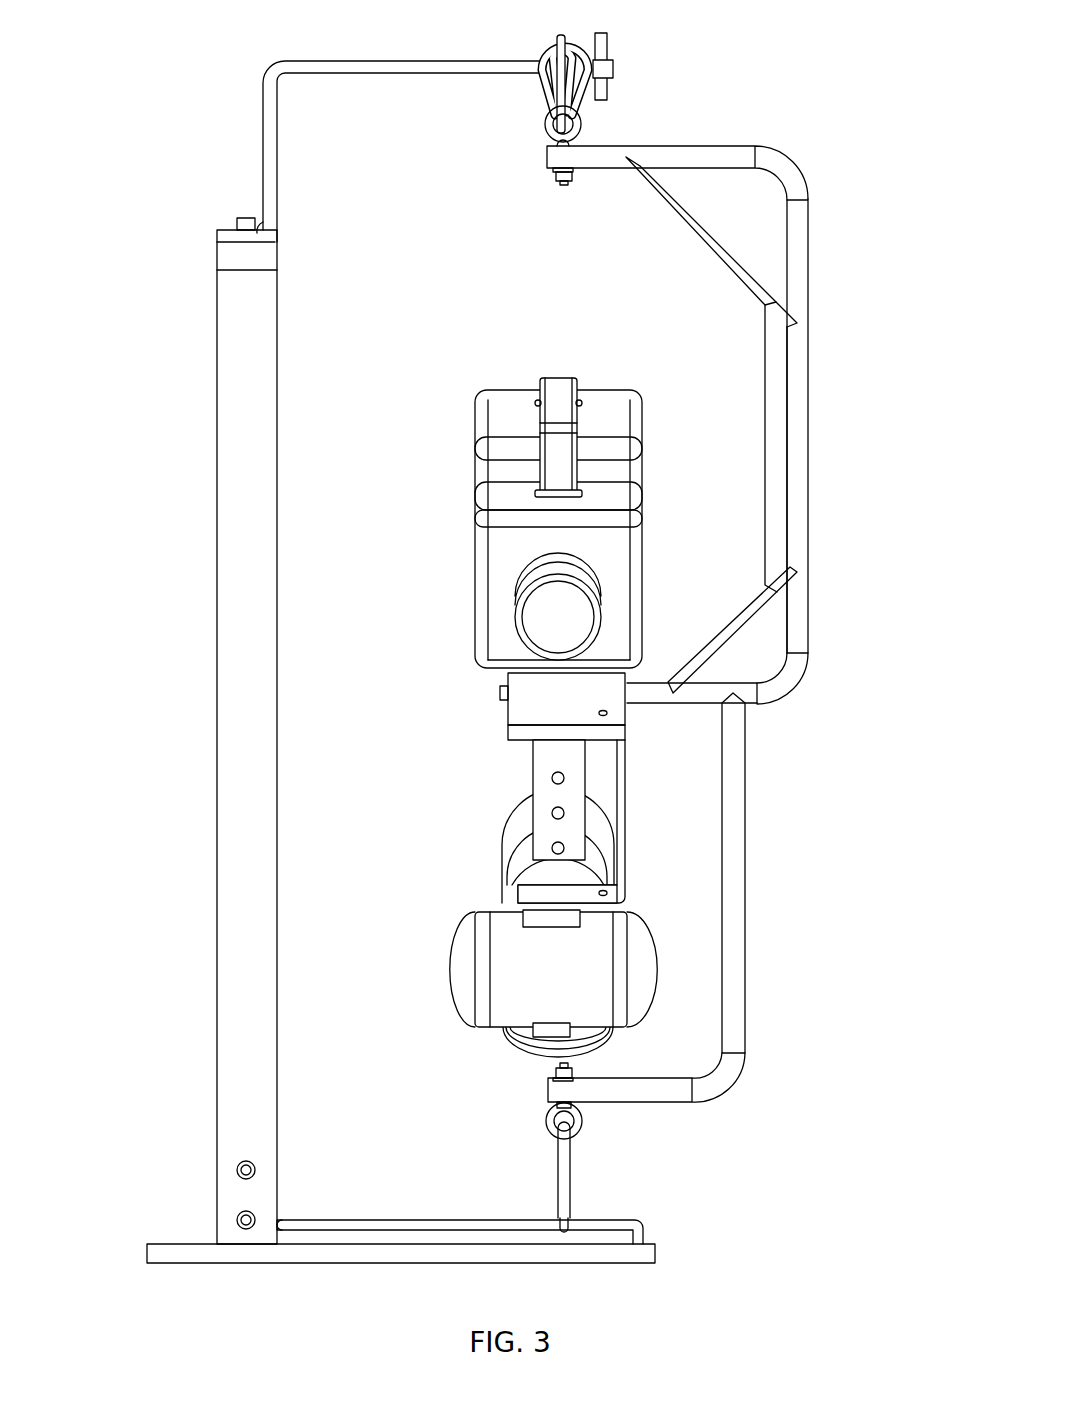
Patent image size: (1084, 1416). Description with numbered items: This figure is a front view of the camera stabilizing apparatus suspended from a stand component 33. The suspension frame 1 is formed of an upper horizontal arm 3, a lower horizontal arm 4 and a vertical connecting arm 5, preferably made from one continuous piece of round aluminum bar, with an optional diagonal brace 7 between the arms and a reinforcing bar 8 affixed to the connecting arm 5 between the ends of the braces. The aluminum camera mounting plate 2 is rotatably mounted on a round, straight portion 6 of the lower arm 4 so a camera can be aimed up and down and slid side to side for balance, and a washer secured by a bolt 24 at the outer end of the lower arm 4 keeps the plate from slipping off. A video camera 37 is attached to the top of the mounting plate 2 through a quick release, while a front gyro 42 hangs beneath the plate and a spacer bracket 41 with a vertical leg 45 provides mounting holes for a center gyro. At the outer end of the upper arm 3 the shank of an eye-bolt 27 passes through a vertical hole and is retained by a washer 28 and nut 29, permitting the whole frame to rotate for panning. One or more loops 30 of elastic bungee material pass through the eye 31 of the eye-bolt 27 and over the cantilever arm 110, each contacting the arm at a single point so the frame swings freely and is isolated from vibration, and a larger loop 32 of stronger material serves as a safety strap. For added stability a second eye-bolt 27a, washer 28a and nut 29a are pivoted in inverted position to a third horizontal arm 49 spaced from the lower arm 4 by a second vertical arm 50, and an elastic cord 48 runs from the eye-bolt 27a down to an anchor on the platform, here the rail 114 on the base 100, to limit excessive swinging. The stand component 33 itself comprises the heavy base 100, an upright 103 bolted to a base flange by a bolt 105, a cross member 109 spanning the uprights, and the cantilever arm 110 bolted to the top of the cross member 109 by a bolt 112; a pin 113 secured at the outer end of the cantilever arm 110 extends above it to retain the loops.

The suspension frame 1 is at (828, 233).
The camera mounting plate 2 is at (506, 714).
The upper horizontal arm 3 is at (660, 146).
The lower horizontal arm 4 is at (748, 708).
The vertical connecting arm 5 is at (810, 412).
The portion of the lower arm 6 is at (655, 705).
The diagonal brace 7 is at (672, 220).
The bar 8 is at (766, 408).
The bolt 24 is at (503, 690).
The eye-bolt 27 is at (558, 145).
The washer 28 is at (552, 168).
The nut 29 is at (556, 178).
The loop 30 is at (540, 52).
The eye 31 is at (545, 125).
The loop 32 is at (557, 37).
The stand component 33 is at (177, 530).
The video camera 37 is at (475, 547).
The spacer bracket 41 is at (532, 767).
The front gyro 42 is at (475, 960).
The vertical leg 45 is at (532, 812).
The elastic cord 48 is at (571, 1180).
The third horizontal arm 49 is at (645, 1105).
The second vertical arm 50 is at (746, 990).
The base 100 is at (657, 1255).
The upright 103 is at (217, 683).
The bolt 105 is at (236, 1172).
The cross member 109 is at (217, 262).
The cantilever arm 110 is at (262, 120).
The bolt 112 is at (240, 220).
The pin 113 is at (608, 38).
The rail 114 is at (370, 1222).
The second eye-bolt 27a is at (553, 1105).
The washer 28a is at (548, 1079).
The nut 29a is at (556, 1069).